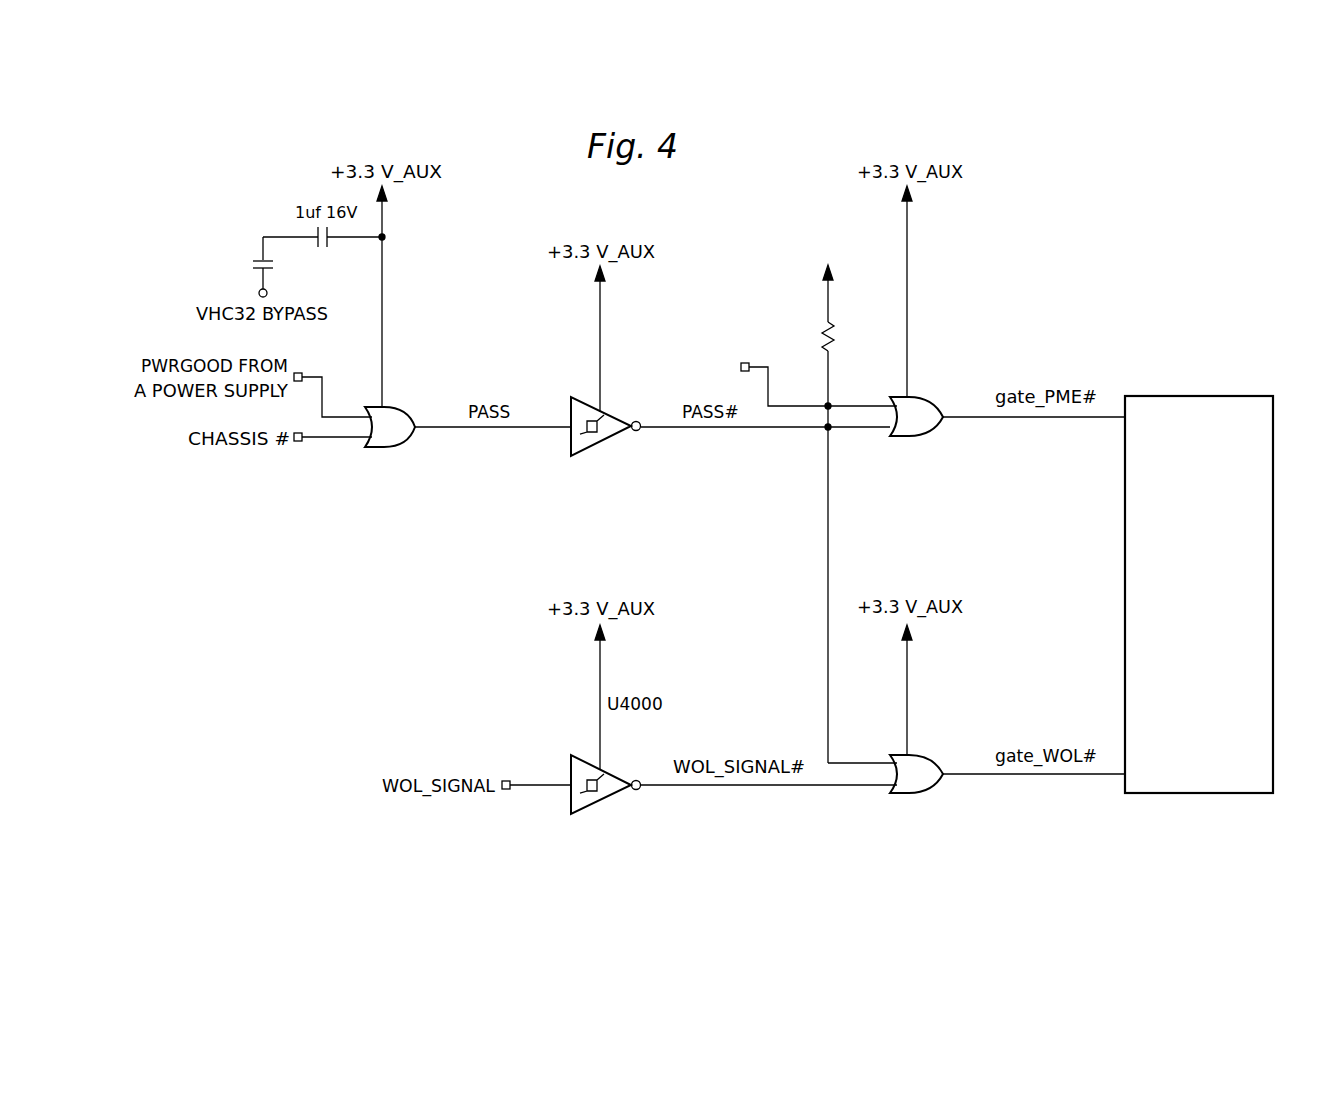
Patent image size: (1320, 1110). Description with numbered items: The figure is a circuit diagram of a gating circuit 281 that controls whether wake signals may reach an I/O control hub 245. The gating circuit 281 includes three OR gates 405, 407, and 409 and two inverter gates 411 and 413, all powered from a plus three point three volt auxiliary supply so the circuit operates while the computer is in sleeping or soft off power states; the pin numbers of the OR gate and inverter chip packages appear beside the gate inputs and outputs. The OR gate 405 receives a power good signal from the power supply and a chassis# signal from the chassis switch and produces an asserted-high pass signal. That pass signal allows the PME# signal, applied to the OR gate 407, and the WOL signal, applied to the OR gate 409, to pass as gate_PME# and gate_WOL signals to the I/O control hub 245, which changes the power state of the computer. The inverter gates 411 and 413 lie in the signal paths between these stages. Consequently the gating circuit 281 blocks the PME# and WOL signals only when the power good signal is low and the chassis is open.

The OR gate 405 is at (377, 448).
The inverter gate 411 is at (611, 440).
The OR gate 407 is at (911, 438).
The OR gate 409 is at (911, 795).
The inverter gate 413 is at (611, 799).
The I/O control hub 245 is at (1240, 395).
The gating circuit 281 is at (1091, 198).